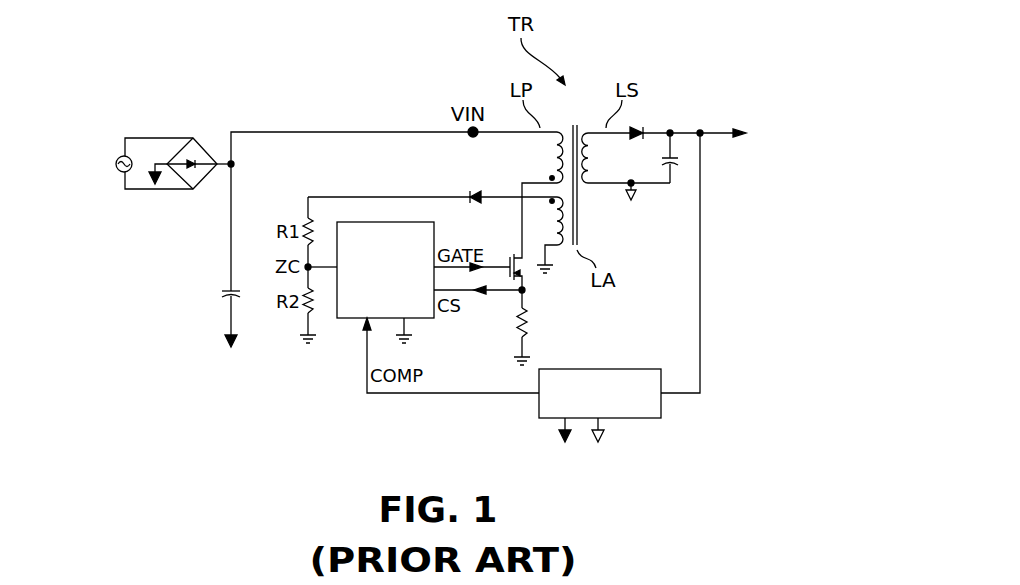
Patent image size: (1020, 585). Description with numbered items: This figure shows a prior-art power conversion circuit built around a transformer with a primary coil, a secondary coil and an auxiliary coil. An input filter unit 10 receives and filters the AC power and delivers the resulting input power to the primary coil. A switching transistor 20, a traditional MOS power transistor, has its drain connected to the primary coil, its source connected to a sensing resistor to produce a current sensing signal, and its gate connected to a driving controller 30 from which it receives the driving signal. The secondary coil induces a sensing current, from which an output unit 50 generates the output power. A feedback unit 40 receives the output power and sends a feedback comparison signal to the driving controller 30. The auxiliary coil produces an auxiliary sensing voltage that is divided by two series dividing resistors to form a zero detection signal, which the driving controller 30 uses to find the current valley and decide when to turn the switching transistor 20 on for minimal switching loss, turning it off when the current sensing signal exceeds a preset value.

The input filter unit 10 is at (180, 118).
The switching transistor 20 is at (525, 270).
The driving controller 30 is at (355, 320).
The feedback unit 40 is at (633, 418).
The output unit 50 is at (665, 115).